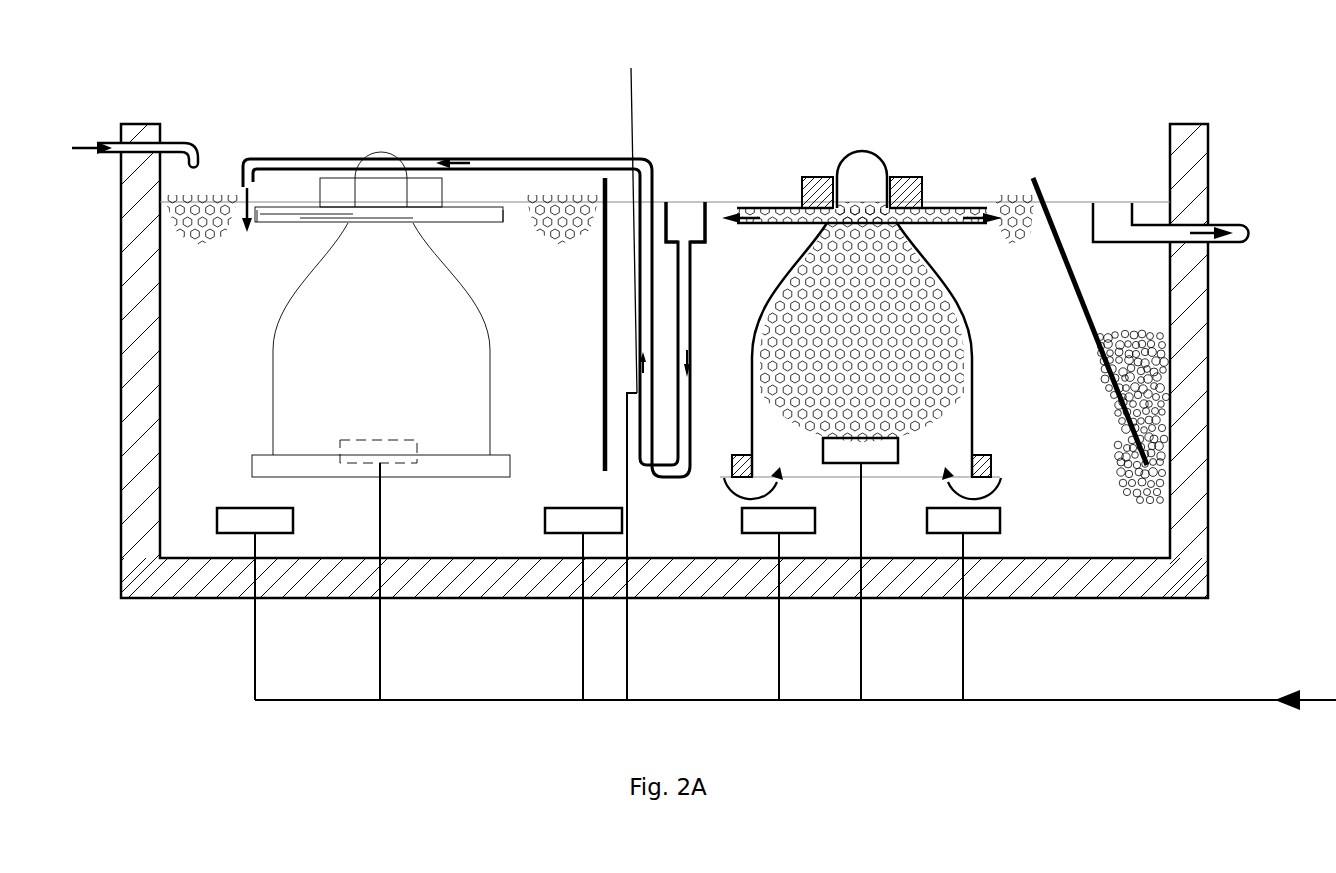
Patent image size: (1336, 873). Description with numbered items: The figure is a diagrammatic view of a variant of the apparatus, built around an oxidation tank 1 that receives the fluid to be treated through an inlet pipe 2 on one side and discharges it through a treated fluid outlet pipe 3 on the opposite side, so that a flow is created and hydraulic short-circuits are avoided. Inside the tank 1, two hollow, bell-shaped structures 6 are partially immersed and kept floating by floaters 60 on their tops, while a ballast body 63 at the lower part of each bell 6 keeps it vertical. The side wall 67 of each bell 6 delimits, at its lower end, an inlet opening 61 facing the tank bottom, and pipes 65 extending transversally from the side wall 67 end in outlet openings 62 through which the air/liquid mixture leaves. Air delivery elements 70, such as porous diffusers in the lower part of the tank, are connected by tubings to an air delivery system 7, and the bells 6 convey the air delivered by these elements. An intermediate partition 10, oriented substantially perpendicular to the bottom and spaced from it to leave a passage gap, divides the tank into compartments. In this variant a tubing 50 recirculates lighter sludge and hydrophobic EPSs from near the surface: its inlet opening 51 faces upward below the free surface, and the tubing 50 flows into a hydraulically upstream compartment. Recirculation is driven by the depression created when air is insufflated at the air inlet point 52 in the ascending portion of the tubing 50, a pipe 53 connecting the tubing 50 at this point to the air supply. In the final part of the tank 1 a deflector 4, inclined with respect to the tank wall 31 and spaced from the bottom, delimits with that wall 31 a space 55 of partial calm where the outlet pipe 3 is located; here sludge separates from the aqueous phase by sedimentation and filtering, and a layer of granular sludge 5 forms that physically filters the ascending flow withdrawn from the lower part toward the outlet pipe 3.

The oxidation tank 1 is at (673, 318).
The inlet pipe 2 is at (112, 141).
The treated fluid outlet pipe 3 is at (1233, 228).
The deflector 4 is at (1044, 180).
The granular sludge 5 is at (1160, 398).
The bell-shaped structure 6 is at (607, 258).
The air delivery system 7 is at (1118, 713).
The intermediate partition 10 is at (602, 318).
The wall of the tank 31 is at (1168, 145).
The tubing 50 is at (613, 158).
The inlet opening 51 is at (704, 205).
The air inlet point 52 is at (629, 215).
The pipe 53 is at (628, 663).
The space 55 is at (1163, 293).
The floater 60 is at (425, 187).
The inlet opening 61 is at (346, 482).
The outlet opening 62 is at (257, 216).
The ballast body 63 is at (262, 465).
The pipe 65 is at (290, 209).
The side wall 67 is at (272, 341).
The air delivery element 70 is at (228, 527).